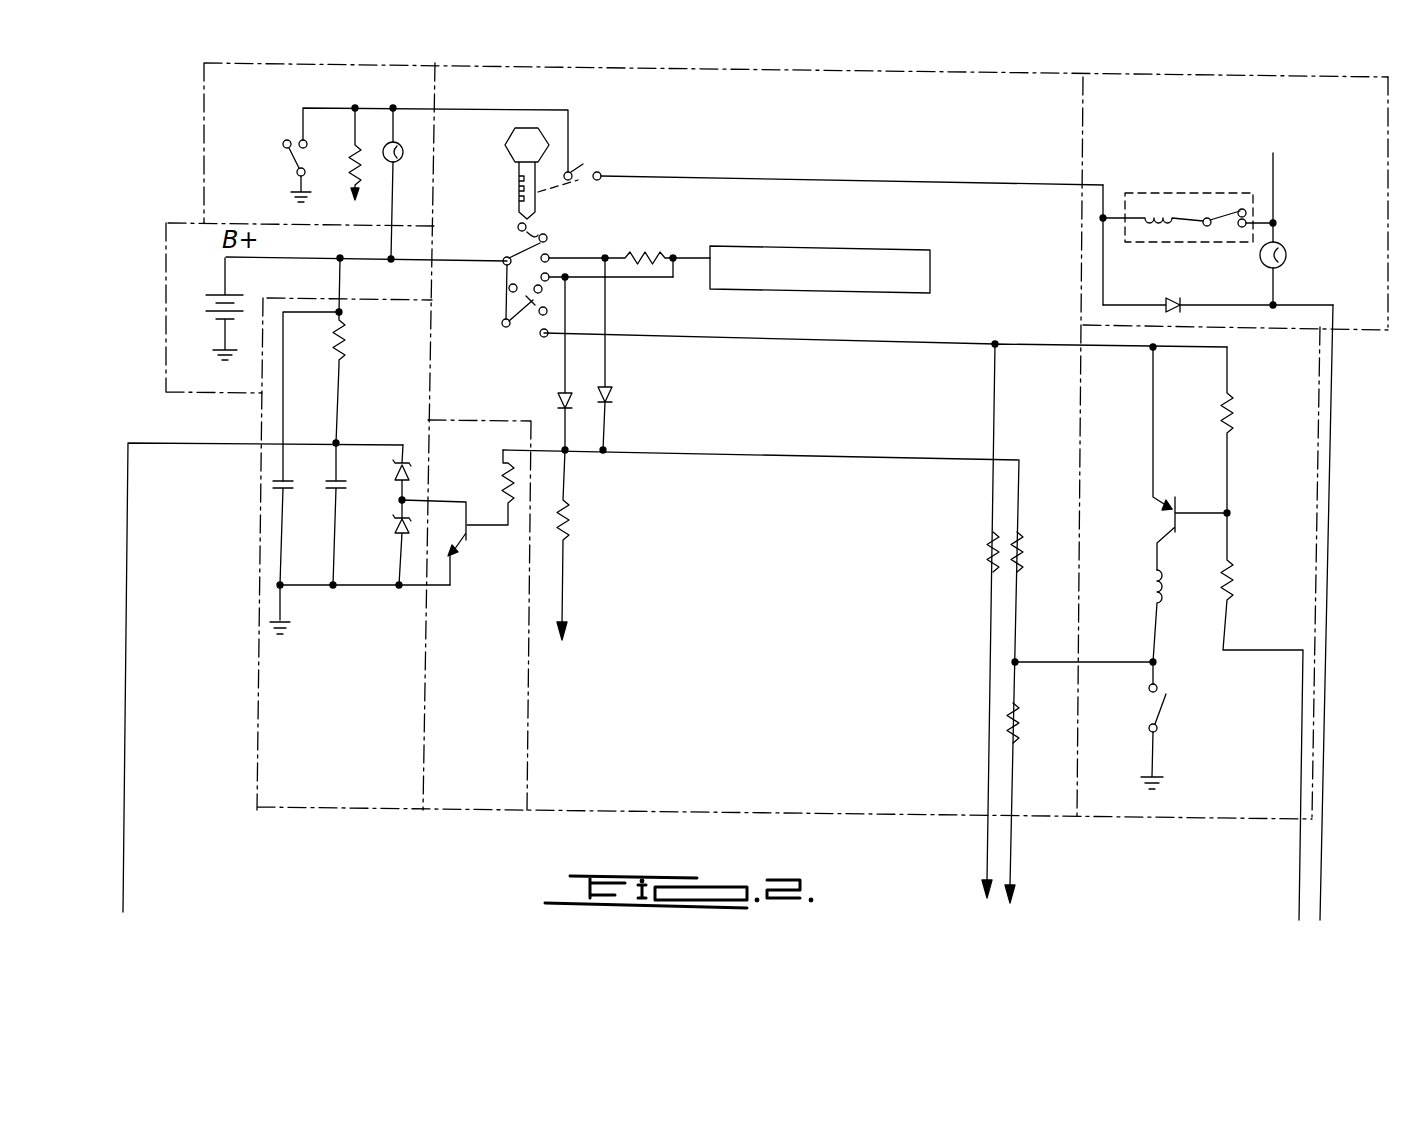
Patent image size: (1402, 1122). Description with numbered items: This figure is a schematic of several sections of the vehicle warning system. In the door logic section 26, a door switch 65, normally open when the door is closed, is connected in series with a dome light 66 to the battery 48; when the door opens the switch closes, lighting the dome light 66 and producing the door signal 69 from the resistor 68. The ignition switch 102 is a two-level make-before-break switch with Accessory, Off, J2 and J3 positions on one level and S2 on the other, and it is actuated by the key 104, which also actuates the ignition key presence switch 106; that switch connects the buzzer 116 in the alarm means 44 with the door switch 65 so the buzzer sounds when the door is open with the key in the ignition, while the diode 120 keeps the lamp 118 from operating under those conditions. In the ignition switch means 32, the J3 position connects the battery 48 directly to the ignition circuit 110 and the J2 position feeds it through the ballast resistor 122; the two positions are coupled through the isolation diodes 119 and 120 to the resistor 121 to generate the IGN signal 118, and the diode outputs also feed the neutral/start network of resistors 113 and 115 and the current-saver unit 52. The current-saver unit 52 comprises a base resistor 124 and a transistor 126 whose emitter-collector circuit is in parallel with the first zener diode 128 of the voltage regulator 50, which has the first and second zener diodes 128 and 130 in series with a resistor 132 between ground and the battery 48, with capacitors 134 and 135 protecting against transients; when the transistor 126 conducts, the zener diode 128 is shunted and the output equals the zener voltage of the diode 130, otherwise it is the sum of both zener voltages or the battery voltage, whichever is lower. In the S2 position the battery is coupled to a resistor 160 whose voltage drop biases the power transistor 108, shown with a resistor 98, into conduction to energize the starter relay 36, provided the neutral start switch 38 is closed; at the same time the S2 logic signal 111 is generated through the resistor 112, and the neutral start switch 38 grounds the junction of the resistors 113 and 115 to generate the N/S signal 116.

The door lighting circuit 26 is at (200, 123).
The door switch 65 is at (283, 150).
The resistor 68 is at (352, 152).
The door signal 69 is at (358, 203).
The dome light 66 is at (400, 165).
The key 104 is at (508, 148).
The ignition key presence switch 106 is at (578, 170).
The ballast resistor 122 is at (642, 254).
The ignition circuit 110 is at (905, 232).
The buzzer 116 is at (1180, 192).
The lamp 118 is at (600, 620).
The diode 120 is at (608, 398).
The alarm means 44 is at (1393, 105).
The battery 48 is at (166, 340).
The voltage regulator circuit 50 is at (257, 651).
The resistor 132 is at (347, 330).
The ignition switch 102 is at (525, 322).
The current-saver unit 52 is at (440, 728).
The ignition switch means 32 is at (665, 698).
The isolation diode 119 is at (556, 403).
The base resistor 124 is at (503, 475).
The transistor 126 is at (478, 540).
The resistor 121 is at (572, 526).
The second zener diode 130 is at (396, 482).
The first zener diode 128 is at (398, 545).
The capacitor 135 is at (272, 502).
The capacitor 134 is at (330, 500).
The resistor 112 is at (982, 552).
The resistor 113 is at (1024, 566).
The resistor 115 is at (1022, 718).
The power transistor 108 is at (1170, 505).
The resistor 160 is at (1234, 410).
The resistor 98 is at (1233, 575).
The starter relay 36 is at (1163, 590).
The neutral start switch 38 is at (1160, 702).
The S2 logic signal 111 is at (968, 892).